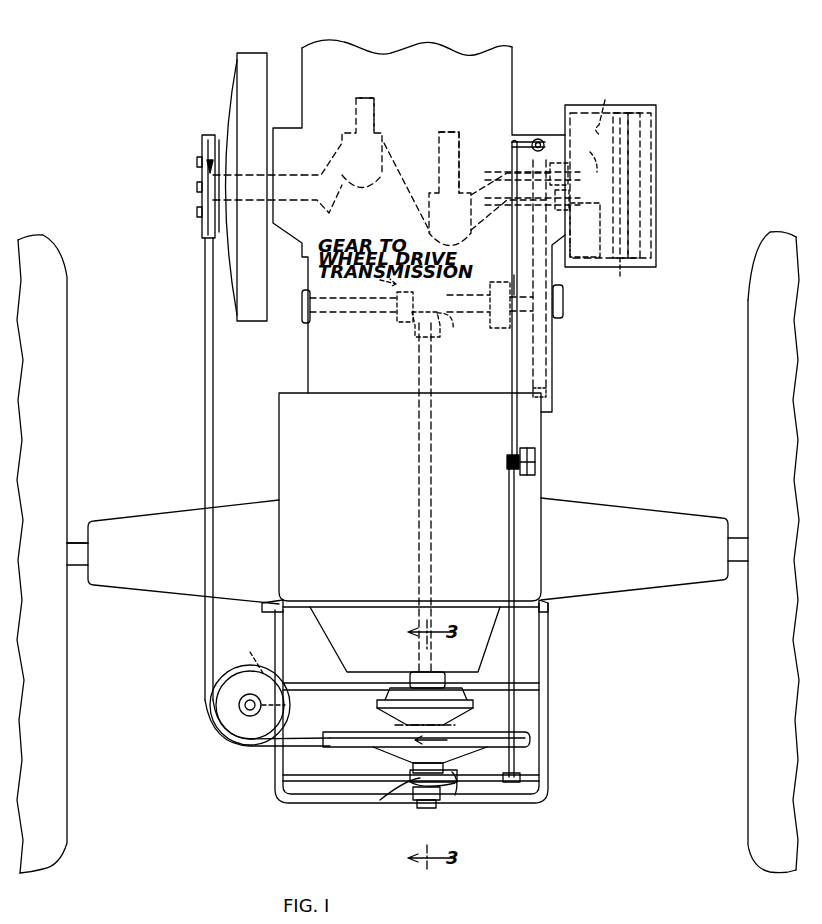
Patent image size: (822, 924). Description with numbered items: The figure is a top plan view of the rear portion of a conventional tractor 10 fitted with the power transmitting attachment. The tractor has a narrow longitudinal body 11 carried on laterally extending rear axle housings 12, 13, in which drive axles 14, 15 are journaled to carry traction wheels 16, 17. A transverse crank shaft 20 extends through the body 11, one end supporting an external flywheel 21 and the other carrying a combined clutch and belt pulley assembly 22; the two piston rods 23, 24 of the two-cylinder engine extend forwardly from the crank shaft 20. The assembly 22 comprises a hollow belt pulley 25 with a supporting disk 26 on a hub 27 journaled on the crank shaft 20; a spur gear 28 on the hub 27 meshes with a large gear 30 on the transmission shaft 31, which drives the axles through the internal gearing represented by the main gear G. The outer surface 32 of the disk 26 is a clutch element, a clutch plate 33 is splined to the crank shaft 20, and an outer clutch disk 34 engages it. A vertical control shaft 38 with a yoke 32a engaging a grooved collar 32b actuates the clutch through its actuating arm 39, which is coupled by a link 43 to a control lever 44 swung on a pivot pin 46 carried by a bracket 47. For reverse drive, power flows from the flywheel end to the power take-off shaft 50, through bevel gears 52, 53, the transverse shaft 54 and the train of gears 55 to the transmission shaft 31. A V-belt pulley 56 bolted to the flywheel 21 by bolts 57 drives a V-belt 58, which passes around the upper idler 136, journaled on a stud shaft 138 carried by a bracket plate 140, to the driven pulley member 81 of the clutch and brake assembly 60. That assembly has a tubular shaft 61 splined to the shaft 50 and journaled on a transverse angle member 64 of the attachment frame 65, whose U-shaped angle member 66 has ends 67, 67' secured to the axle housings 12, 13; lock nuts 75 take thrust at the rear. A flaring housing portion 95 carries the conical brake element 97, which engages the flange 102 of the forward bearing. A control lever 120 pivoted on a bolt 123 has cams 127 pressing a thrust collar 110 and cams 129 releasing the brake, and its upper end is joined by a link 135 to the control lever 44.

The tractor 10 is at (542, 45).
The body 11 is at (452, 60).
The rear axle housing 12 is at (138, 520).
The rear axle housing 13 is at (605, 516).
The drive axle 14 is at (76, 540).
The drive axle 15 is at (738, 540).
The traction wheel 16 is at (60, 418).
The traction wheel 17 is at (757, 405).
The crank shaft 20 is at (426, 172).
The flywheel 21 is at (246, 60).
The combined clutch and belt pulley assembly 22 is at (660, 92).
The piston rod 23 is at (374, 117).
The piston rod 24 is at (440, 135).
The belt pulley 25 is at (593, 105).
The supporting disk 26 is at (615, 107).
The hub 27 is at (582, 153).
The spur gear 28 is at (522, 214).
The gear 30 is at (552, 350).
The transmission shaft 31 is at (513, 283).
The outer surface 32 is at (620, 280).
The yoke 32a is at (539, 138).
The annularly grooved collar 32b is at (584, 230).
The clutch plate 33 is at (626, 163).
The outer clutch disk 34 is at (643, 208).
The control shaft 38 is at (520, 175).
The actuating arm 39 is at (510, 147).
The link 43 is at (512, 256).
The control lever 44 is at (535, 453).
The pivot pin 46 is at (507, 462).
The bracket 47 is at (537, 467).
The power take-off shaft 50 is at (419, 492).
The bevel gear 52 is at (403, 332).
The bevel gear 53 is at (435, 334).
The transverse shaft 54 is at (456, 320).
The train of gears 55 is at (490, 288).
The V-belt pulley 56 is at (203, 142).
The bolts 57 is at (197, 212).
The V-belt 58 is at (207, 338).
The clutch and brake assembly 60 is at (365, 756).
The tubular shaft 61 is at (428, 800).
The transverse angle member 64 is at (381, 688).
The attachment frame 65 is at (562, 714).
The structural angle member 66 is at (545, 758).
The end 67 is at (256, 615).
The end 67' is at (562, 617).
The lock nuts 75 is at (434, 808).
The pulley member 81 is at (452, 767).
The housing portion 95 is at (457, 711).
The brake element 97 is at (458, 700).
The radial flange 102 is at (447, 690).
The thrust collar 110 is at (415, 770).
The control lever 120 is at (487, 778).
The pivot bolt 123 is at (460, 792).
The cam 127 is at (445, 783).
The cam 129 is at (388, 795).
The link 135 is at (509, 538).
The upper idler 136 is at (225, 713).
The stud shaft 138 is at (250, 710).
The bracket plate 140 is at (255, 668).
The main gear G is at (395, 322).